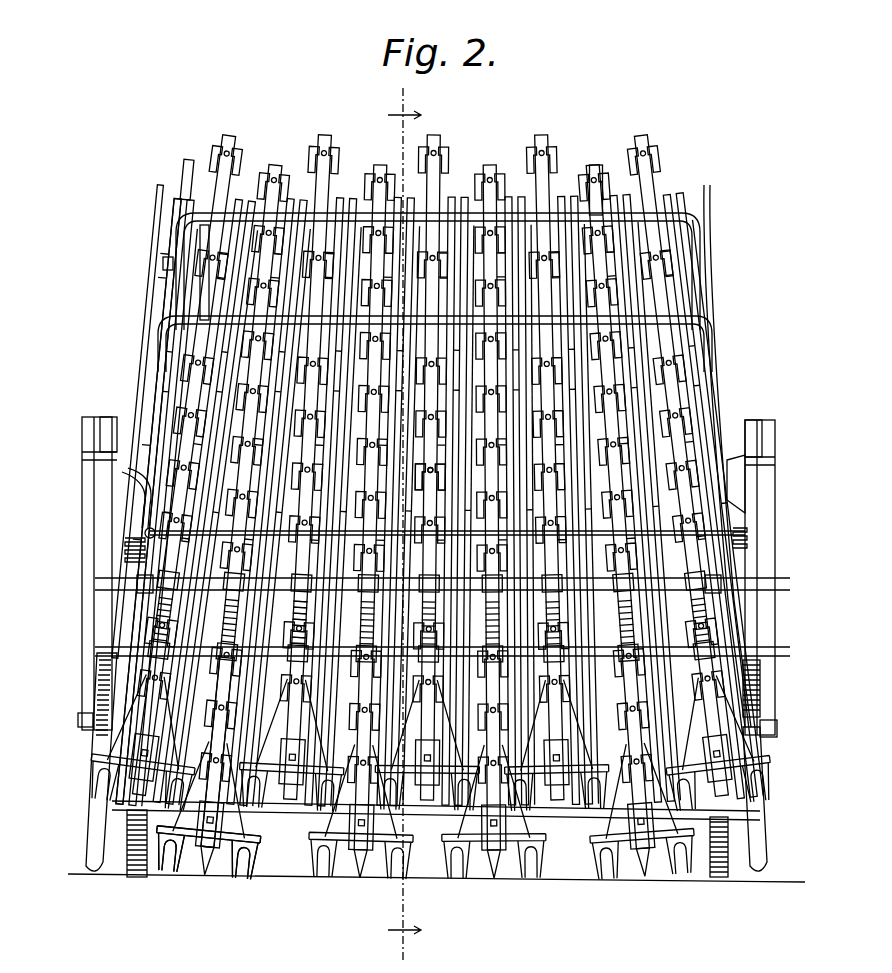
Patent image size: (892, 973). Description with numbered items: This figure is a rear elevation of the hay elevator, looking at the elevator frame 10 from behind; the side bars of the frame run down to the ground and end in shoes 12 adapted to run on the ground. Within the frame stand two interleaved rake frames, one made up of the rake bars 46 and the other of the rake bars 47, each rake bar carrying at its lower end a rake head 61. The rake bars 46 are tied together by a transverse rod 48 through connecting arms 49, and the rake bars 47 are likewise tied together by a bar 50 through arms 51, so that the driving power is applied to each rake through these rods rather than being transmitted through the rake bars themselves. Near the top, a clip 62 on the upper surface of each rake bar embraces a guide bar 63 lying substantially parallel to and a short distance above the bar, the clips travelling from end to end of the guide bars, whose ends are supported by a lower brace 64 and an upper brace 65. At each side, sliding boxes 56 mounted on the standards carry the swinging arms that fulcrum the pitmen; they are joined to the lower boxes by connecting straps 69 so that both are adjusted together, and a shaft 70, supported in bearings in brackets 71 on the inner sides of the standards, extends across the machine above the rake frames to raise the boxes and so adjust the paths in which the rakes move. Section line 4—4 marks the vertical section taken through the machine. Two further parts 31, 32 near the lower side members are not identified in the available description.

The section line 4— 4 is at (404, 521).
The elevator frame 10 is at (712, 403).
The shoe 12 is at (95, 845).
The rack bar 31 is at (708, 840).
The rack bar 32 is at (148, 843).
The rake bars 46 is at (195, 392).
The rake bars 47 is at (430, 452).
The transverse rod 48 is at (120, 583).
The connecting arms 49 is at (145, 610).
The bar 50 is at (110, 652).
The arms 51 is at (95, 690).
The sliding boxes 56 is at (112, 462).
The rake head 61 is at (360, 853).
The clip 62 is at (205, 243).
The guide bar 63 is at (205, 286).
The brace 64 is at (685, 320).
The brace 65 is at (594, 175).
The connecting straps 69 is at (115, 512).
The shaft 70 is at (445, 545).
The brackets 71 is at (120, 545).